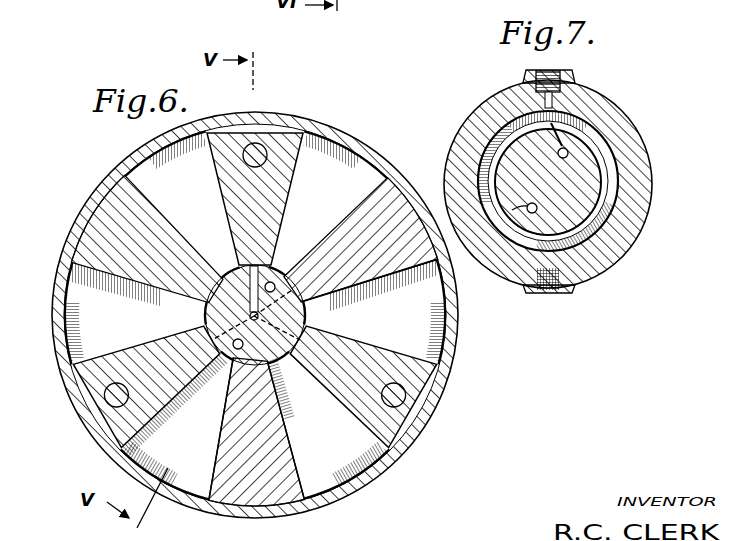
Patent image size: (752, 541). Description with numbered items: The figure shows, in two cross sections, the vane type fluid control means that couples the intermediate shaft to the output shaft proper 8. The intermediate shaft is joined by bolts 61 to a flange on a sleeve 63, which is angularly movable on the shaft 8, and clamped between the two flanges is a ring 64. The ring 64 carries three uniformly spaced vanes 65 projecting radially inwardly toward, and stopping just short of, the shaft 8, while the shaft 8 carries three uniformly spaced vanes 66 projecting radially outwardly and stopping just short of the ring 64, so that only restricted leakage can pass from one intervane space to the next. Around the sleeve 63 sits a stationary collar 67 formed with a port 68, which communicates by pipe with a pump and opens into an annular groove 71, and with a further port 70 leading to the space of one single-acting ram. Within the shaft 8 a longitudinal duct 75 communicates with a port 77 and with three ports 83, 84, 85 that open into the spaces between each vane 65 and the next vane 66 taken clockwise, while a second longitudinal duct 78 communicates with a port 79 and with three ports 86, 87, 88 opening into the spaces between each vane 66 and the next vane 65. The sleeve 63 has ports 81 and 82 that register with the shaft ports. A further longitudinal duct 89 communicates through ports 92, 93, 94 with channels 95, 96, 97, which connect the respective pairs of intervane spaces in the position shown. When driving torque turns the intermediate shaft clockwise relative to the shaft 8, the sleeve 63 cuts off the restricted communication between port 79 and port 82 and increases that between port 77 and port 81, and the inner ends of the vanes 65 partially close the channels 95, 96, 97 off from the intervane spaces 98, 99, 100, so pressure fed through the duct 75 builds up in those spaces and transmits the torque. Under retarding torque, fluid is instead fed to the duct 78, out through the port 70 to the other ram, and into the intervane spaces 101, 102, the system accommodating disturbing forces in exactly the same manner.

In FIG. 7, the output shaft proper 8 is at (608, 200).
In FIG. 6, the bolts 61 is at (262, 148).
In FIG. 7, the sleeve 63 is at (612, 190).
In FIG. 6, the ring 64 is at (349, 142).
In FIG. 6, the vanes 65 is at (224, 188).
In FIG. 6, the vanes 66 is at (115, 215).
In FIG. 7, the stationary collar 67 is at (616, 126).
In FIG. 7, the port 68 is at (561, 77).
In FIG. 7, the port 70 is at (551, 293).
In FIG. 7, the annular groove 71 is at (606, 252).
In FIG. 6, the longitudinal duct 75 is at (330, 300).
In FIG. 7, the longitudinal duct 75 is at (556, 150).
In FIG. 7, the port 77 is at (570, 154).
In FIG. 6, the longitudinal duct 78 is at (284, 362).
In FIG. 7, the longitudinal duct 78 is at (560, 118).
In FIG. 7, the port 79 is at (530, 216).
In FIG. 7, the port 81 is at (588, 104).
In FIG. 7, the port 82 is at (512, 212).
In FIG. 6, the port 83 is at (276, 282).
In FIG. 6, the port 84 is at (284, 358).
In FIG. 6, the port 85 is at (210, 305).
In FIG. 6, the port 86 is at (244, 282).
In FIG. 6, the port 87 is at (290, 318).
In FIG. 6, the port 88 is at (232, 365).
In FIG. 6, the longitudinal duct 89 is at (215, 292).
In FIG. 6, the port 92 is at (300, 325).
In FIG. 6, the port 93 is at (220, 318).
In FIG. 6, the port 94 is at (283, 239).
In FIG. 6, the channel 95 is at (300, 340).
In FIG. 6, the channel 96 is at (222, 360).
In FIG. 6, the channel 97 is at (244, 262).
In FIG. 6, the intervane space 98 is at (357, 176).
In FIG. 6, the intervane space 99 is at (340, 470).
In FIG. 6, the intervane space 100 is at (72, 302).
In FIG. 6, the intervane space 101 is at (448, 322).
In FIG. 6, the intervane space 102 is at (133, 453).